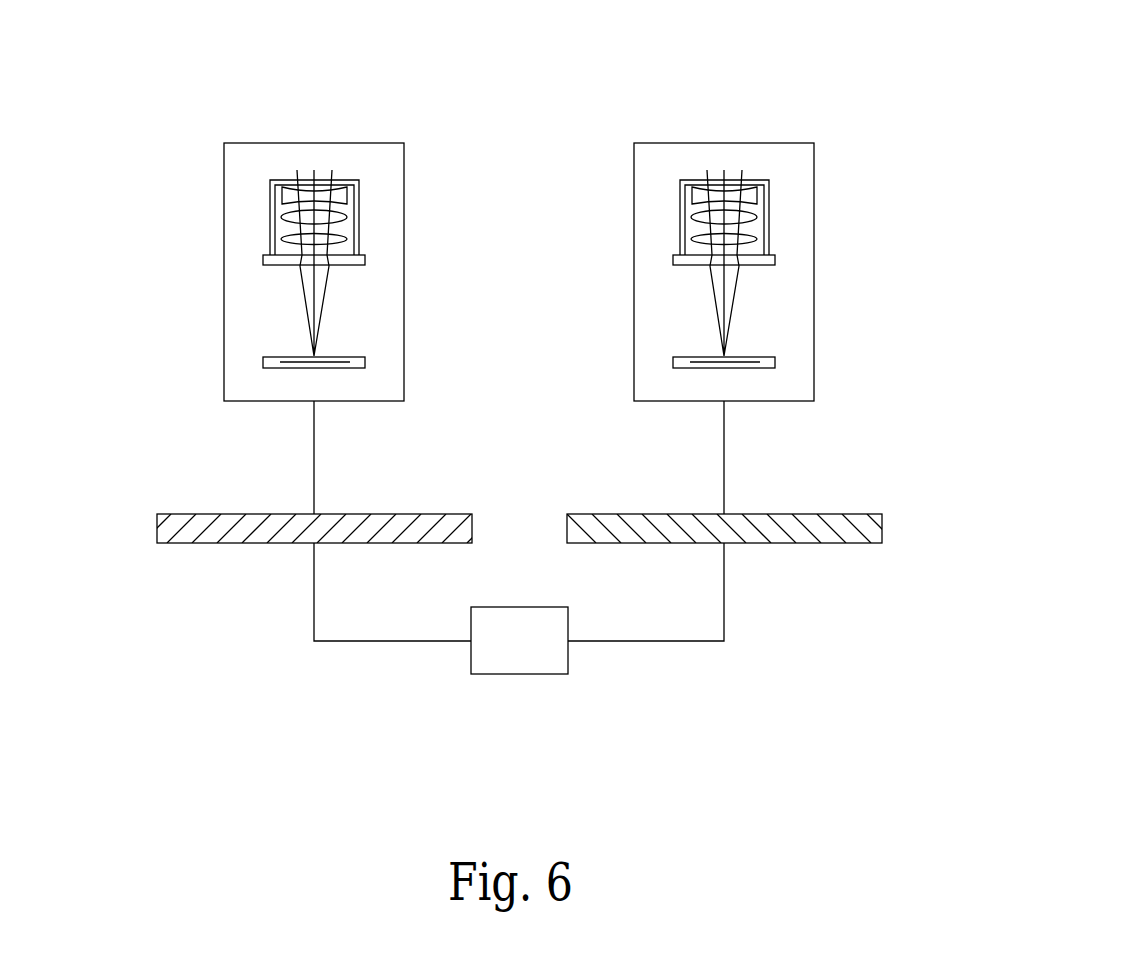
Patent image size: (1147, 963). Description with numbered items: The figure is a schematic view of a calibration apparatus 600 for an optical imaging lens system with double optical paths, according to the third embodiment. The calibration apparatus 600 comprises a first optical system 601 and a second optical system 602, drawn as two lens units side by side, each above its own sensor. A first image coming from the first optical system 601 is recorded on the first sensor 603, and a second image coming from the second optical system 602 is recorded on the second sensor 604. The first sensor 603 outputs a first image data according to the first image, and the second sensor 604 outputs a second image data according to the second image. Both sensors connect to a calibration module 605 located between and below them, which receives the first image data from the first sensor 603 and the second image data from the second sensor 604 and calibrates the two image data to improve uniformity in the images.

The calibration apparatus 600 is at (1012, 145).
The first optical system 601 is at (224, 272).
The second optical system 602 is at (814, 272).
The first sensor 603 is at (157, 527).
The second sensor 604 is at (882, 527).
The calibration module 605 is at (519, 640).